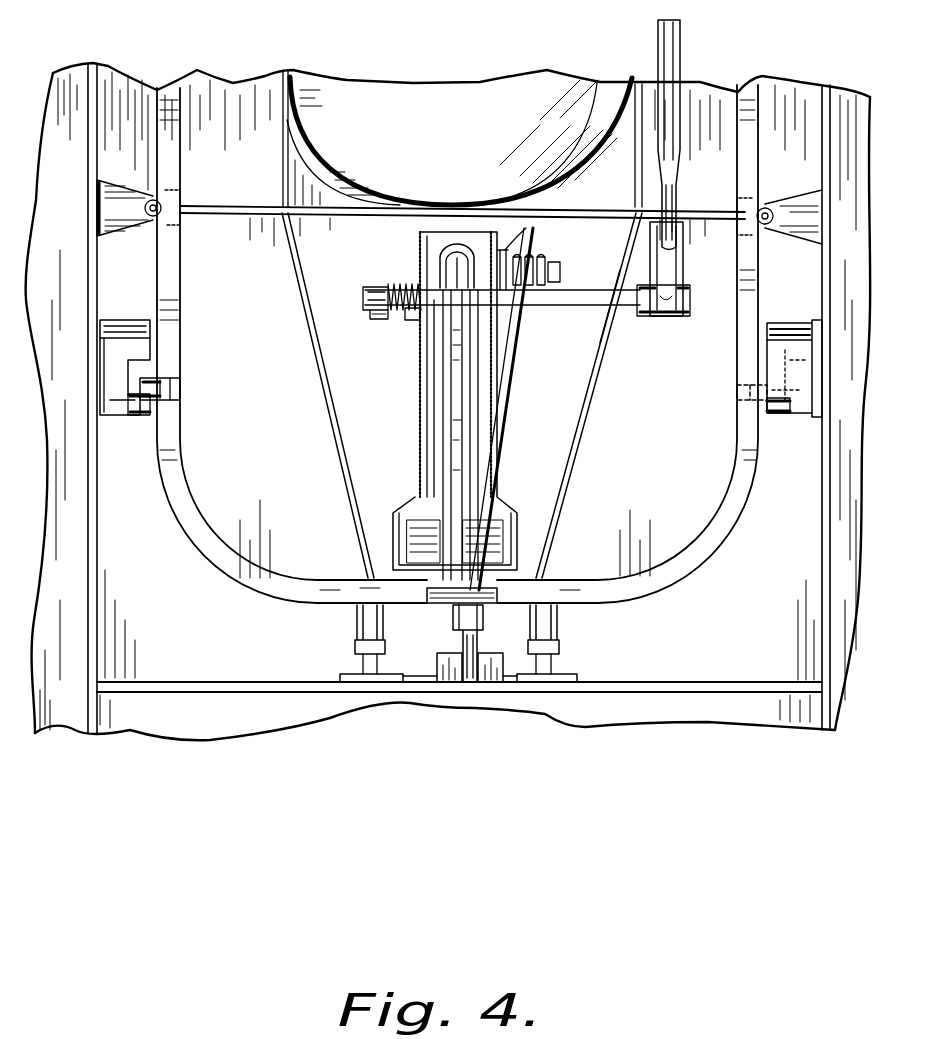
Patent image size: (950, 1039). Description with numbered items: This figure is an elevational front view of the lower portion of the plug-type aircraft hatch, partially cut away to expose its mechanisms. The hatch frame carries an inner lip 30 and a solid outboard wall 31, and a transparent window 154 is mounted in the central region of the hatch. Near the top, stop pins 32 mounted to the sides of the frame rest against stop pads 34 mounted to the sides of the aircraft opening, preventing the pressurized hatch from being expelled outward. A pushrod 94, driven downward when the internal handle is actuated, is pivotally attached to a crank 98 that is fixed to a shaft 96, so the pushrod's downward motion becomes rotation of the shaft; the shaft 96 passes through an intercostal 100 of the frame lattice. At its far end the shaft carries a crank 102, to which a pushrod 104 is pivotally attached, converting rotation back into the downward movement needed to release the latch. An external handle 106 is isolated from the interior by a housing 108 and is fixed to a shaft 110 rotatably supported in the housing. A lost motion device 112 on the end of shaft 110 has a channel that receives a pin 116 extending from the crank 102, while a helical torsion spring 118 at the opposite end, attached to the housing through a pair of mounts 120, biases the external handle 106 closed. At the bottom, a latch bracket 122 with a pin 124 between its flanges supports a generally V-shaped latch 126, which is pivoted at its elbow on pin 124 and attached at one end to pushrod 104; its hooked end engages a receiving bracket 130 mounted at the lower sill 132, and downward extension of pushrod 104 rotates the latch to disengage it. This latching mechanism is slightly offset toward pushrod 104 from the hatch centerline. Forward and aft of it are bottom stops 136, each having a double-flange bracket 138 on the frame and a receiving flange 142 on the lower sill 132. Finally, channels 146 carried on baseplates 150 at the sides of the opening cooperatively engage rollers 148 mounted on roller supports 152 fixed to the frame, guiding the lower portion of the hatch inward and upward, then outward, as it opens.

The inner lip 30 is at (200, 548).
The outboard wall 31 is at (250, 493).
The stop pins 32 is at (150, 198).
The stop pads 34 is at (97, 206).
The pushrod 94 is at (684, 44).
The shaft 96 is at (590, 318).
The crank 98 is at (672, 318).
The intercostal 100 is at (576, 484).
The crank 102 is at (548, 282).
The pushrod 104 is at (505, 415).
The external handle 106 is at (452, 410).
The housing 108 is at (420, 375).
The shaft 110 is at (437, 278).
The lost motion device 112 is at (510, 260).
The pin 116 is at (505, 250).
The helical torsion spring 118 is at (393, 285).
The mounts 120 is at (372, 316).
The latch bracket 122 is at (460, 632).
The pin 124 is at (453, 610).
The latch 126 is at (470, 696).
The receiving bracket 130 is at (446, 710).
The lower sill 132 is at (118, 680).
The bottom stops 136 is at (343, 650).
The double-flange bracket 138 is at (355, 612).
The receiving flange 142 is at (383, 694).
The channels 146 is at (112, 364).
The rollers 148 is at (780, 416).
The baseplate 150 is at (100, 328).
The roller support 152 is at (162, 378).
The transparent window 154 is at (440, 118).